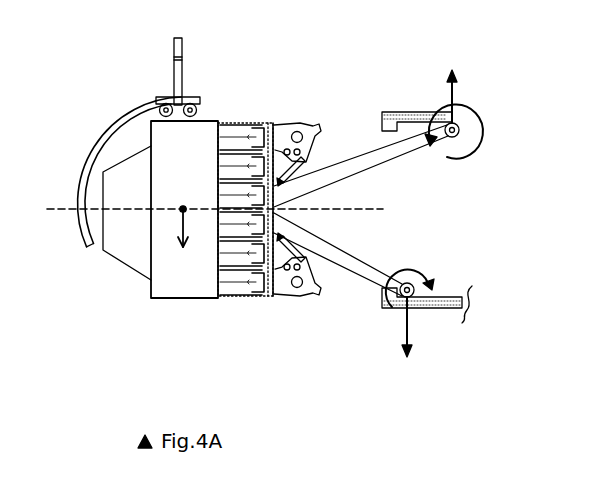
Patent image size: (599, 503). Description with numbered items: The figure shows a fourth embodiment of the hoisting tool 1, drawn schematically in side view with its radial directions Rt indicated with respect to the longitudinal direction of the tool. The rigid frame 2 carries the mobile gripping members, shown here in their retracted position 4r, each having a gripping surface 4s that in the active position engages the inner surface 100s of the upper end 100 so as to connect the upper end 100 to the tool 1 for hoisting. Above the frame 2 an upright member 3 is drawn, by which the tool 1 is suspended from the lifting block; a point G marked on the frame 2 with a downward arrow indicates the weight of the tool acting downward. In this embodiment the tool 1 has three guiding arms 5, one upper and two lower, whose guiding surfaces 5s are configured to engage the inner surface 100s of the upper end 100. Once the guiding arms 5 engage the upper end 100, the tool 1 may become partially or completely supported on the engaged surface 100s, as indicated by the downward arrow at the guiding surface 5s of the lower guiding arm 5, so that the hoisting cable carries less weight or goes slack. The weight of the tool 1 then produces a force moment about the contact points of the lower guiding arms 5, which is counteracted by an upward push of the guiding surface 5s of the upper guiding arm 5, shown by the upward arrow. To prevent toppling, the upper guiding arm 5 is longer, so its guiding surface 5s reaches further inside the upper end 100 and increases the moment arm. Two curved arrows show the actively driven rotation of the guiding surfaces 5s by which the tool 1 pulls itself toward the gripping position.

The hoisting tool 1 is at (80, 67).
The rigid frame 2 is at (158, 284).
The support rod with roller carriage 3 is at (180, 48).
The retracted position 4r is at (231, 124).
The gripping surface 4s is at (224, 124).
The guiding arm 5 is at (353, 257).
The guiding surface 5s is at (447, 113).
The upper end 100 is at (443, 321).
The inner surface 100s is at (446, 296).
The radial direction Rt is at (60, 211).
The center of gravity G is at (172, 226).